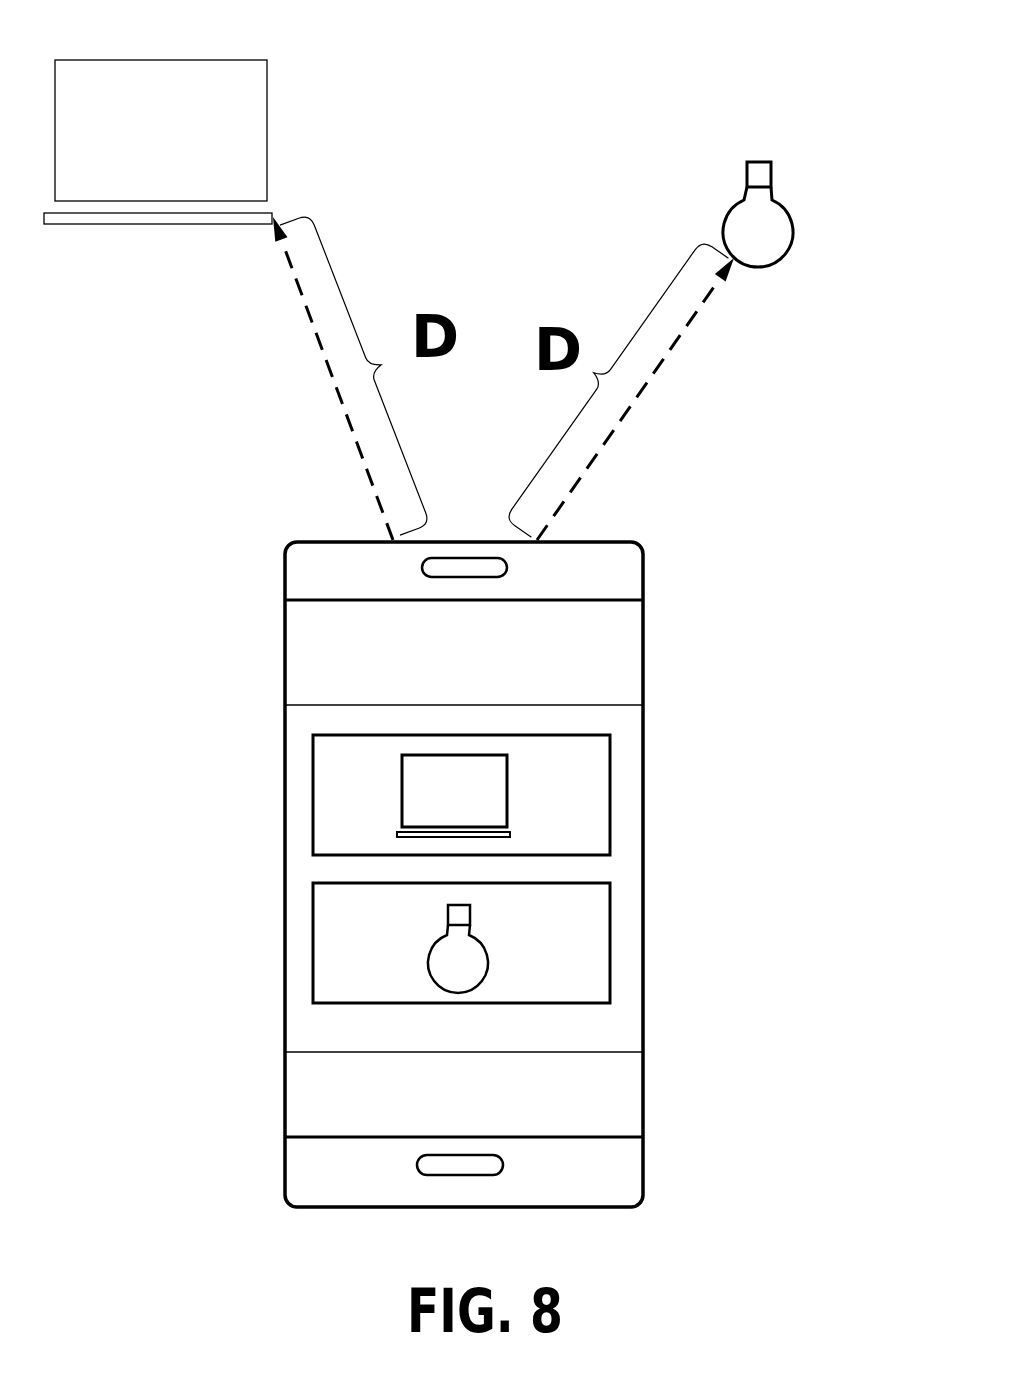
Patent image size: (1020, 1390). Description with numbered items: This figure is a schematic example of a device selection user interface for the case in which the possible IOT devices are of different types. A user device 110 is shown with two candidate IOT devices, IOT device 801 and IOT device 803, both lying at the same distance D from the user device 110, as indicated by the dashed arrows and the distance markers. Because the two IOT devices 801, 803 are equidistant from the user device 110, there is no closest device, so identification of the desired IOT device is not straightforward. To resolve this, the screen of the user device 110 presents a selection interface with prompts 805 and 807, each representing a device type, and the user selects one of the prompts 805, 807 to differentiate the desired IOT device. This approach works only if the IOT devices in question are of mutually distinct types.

The IOT device 801 is at (266, 130).
The IOT device 803 is at (760, 175).
The prompt 805 is at (577, 770).
The prompt 807 is at (575, 943).
The user device 110 is at (285, 1167).